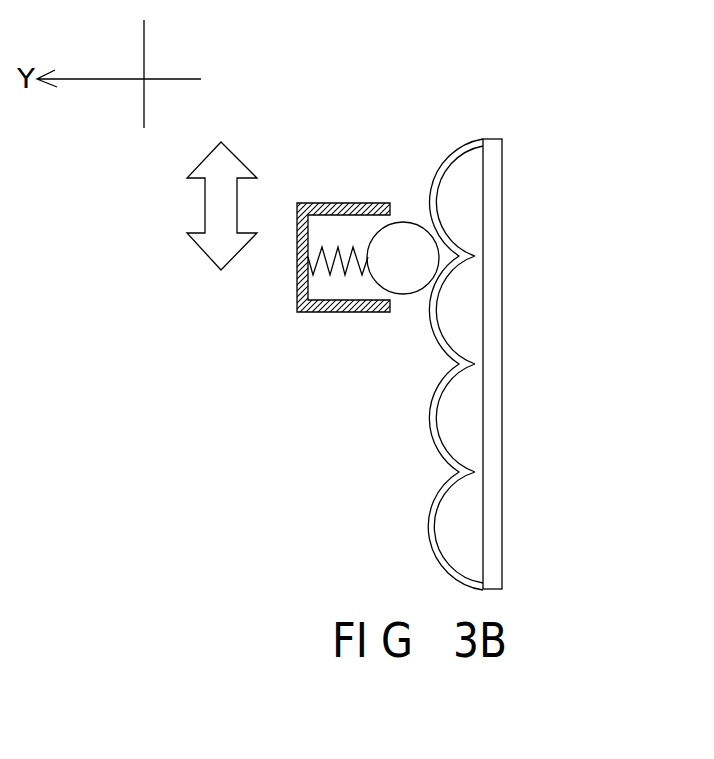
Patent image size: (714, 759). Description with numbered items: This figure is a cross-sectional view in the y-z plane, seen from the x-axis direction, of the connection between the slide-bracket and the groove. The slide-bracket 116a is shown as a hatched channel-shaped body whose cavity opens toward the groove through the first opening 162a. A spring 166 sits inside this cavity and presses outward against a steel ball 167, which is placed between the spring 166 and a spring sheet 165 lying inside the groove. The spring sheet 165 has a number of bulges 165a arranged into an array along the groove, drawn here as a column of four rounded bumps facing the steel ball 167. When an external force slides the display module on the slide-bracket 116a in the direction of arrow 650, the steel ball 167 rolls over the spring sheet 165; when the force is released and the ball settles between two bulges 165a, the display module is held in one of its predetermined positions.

The arrow 650 is at (219, 221).
The slide-bracket 116a is at (297, 275).
The spring 166 is at (327, 270).
The steel ball 167 is at (402, 278).
The first opening 162a is at (396, 216).
The spring sheet 165 is at (435, 312).
The bulges 165a is at (438, 167).